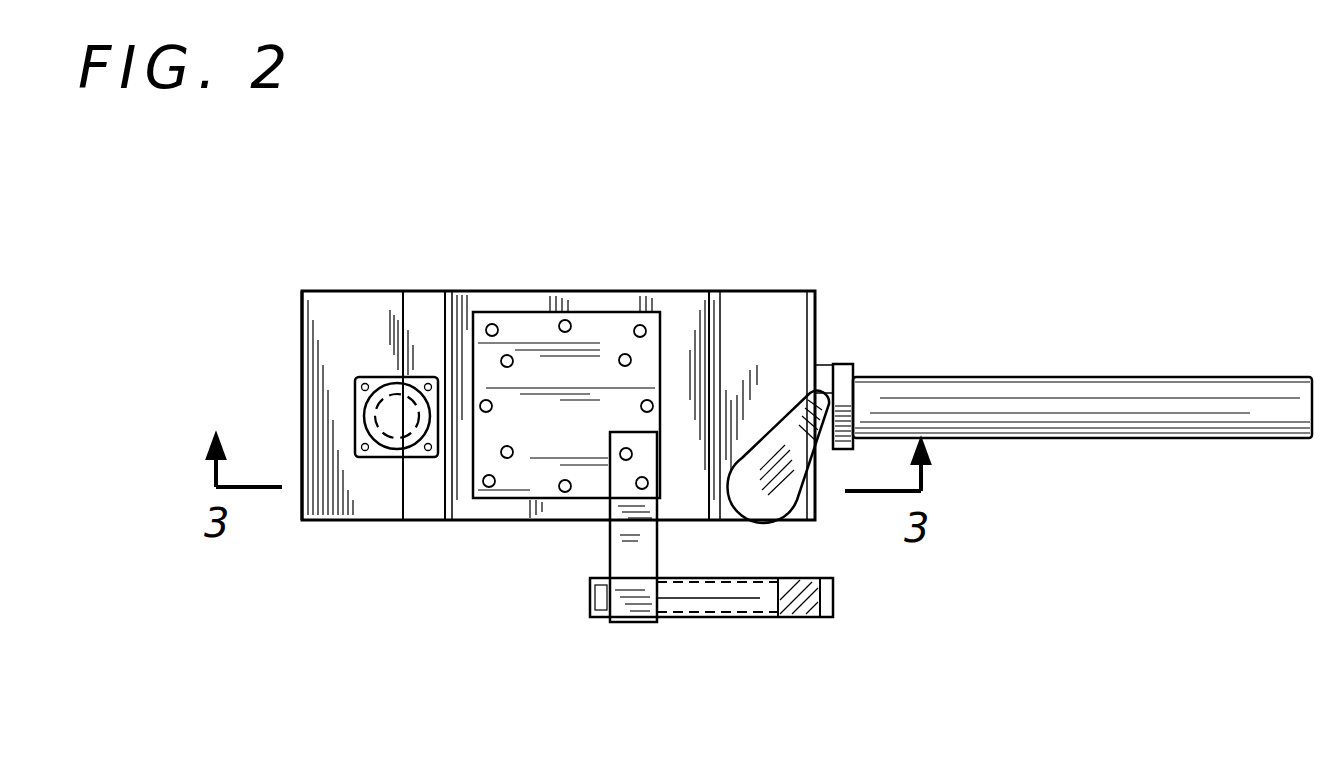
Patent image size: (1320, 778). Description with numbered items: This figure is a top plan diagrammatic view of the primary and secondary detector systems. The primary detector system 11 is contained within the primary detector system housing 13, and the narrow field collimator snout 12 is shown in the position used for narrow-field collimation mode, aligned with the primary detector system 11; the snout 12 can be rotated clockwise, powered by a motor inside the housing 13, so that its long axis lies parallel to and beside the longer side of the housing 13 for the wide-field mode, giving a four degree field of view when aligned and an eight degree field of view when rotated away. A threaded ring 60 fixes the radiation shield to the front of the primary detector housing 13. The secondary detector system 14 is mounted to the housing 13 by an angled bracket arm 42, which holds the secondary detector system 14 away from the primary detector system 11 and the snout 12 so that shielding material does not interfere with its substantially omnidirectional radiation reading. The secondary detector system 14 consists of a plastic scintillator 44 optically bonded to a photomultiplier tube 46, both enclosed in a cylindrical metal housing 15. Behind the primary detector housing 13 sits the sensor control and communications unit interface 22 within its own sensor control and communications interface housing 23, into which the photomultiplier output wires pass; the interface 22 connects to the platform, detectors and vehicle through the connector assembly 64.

The primary detector system 11 is at (502, 532).
The narrow field collimator snout 12 is at (1120, 438).
The primary detector system housing 13 is at (707, 291).
The secondary detector system 14 is at (766, 660).
The cylindrical metal housing 15 is at (695, 587).
The sensor control and communications unit interface 22 is at (381, 532).
The sensor control and communications interface housing 23 is at (326, 522).
The bracket arm 42 is at (635, 623).
The plastic scintillator 44 is at (833, 600).
The photomultiplier tube 46 is at (748, 600).
The threaded ring 60 is at (827, 368).
The connector assembly 64 is at (392, 420).